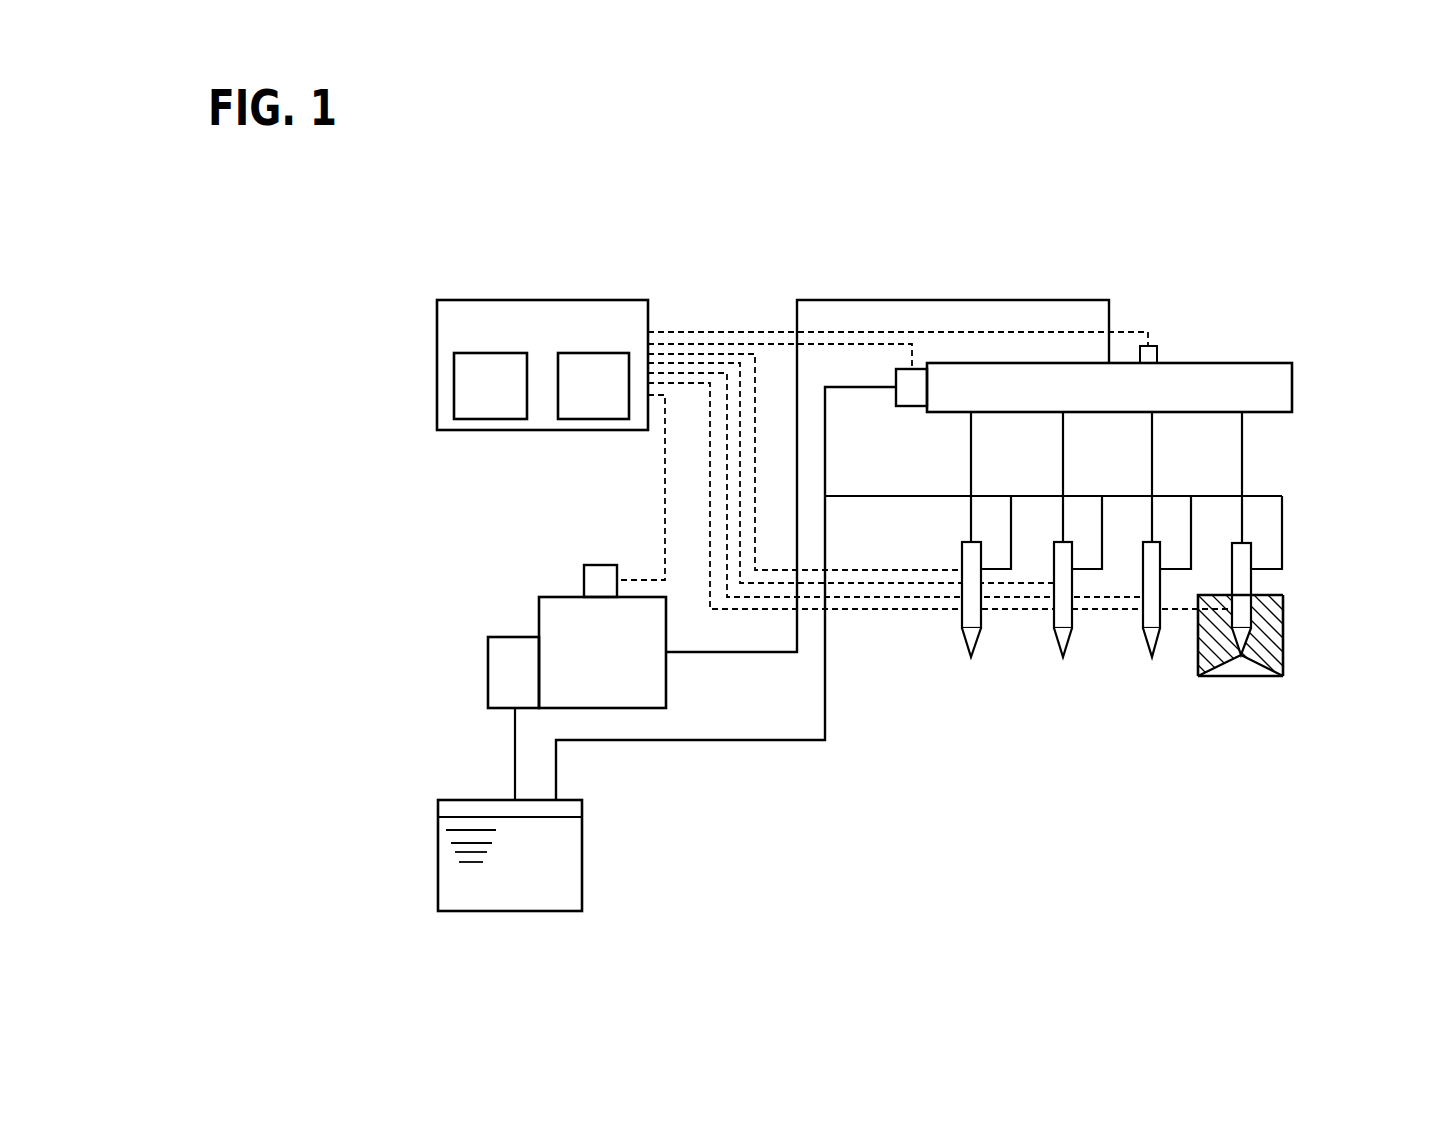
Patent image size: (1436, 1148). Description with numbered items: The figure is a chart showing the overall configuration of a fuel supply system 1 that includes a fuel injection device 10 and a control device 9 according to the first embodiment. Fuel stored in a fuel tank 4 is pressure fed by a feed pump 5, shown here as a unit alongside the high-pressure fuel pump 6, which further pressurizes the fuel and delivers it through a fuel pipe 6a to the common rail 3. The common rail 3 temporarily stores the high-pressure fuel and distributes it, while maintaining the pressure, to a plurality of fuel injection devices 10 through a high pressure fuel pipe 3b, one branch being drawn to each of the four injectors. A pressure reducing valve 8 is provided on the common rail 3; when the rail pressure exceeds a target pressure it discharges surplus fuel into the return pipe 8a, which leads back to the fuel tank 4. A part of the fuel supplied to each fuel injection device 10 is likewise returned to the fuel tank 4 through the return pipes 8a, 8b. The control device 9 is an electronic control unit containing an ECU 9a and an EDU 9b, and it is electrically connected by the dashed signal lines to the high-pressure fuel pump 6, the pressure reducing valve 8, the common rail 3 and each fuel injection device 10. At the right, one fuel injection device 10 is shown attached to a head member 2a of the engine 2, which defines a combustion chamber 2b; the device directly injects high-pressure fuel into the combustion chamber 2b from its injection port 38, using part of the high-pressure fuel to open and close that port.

The fuel supply system 1 is at (490, 264).
The engine 2 is at (1242, 637).
The head member 2a is at (1283, 640).
The combustion chamber 2b is at (1262, 676).
The common rail 3 is at (1233, 363).
The high pressure fuel pipe 3b is at (973, 473).
The fuel tank 4 is at (582, 827).
The feed pump 5 is at (488, 650).
The high-pressure fuel pump 6 is at (539, 611).
The fuel pipe 6a is at (815, 299).
The pressure reducing valve 8 is at (895, 406).
The return pipe 8a is at (826, 685).
The return pipe 8b is at (895, 498).
The control device 9 is at (543, 368).
The ECU 9a is at (507, 419).
The EDU 9b is at (597, 419).
The fuel injection device 10 is at (962, 623).
The injection port 38 is at (1238, 668).